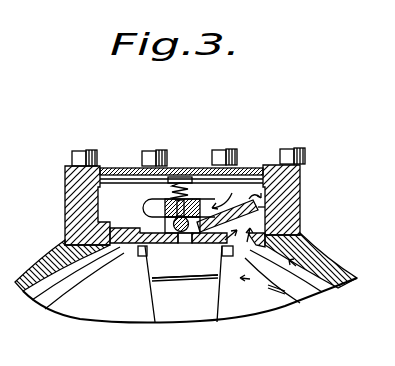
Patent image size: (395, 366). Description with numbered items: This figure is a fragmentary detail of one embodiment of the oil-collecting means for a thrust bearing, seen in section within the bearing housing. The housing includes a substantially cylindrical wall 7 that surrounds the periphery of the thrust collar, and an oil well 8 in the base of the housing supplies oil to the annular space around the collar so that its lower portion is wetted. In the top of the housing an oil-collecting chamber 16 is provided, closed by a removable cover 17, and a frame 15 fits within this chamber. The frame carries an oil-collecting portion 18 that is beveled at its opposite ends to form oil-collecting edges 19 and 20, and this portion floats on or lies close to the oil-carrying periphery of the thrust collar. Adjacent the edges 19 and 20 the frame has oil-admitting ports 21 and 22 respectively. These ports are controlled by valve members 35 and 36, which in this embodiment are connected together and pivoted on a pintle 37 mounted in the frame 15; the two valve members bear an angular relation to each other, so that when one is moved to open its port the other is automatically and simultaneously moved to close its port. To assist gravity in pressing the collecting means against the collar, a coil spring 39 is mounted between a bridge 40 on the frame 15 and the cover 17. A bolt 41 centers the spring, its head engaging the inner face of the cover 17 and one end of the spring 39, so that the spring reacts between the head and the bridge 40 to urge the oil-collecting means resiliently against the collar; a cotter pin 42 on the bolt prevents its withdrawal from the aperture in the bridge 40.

The cylindrical wall 7 is at (322, 264).
The oil well 8 is at (283, 263).
The frame 15 is at (97, 240).
The oil-collecting chamber 16 is at (258, 188).
The cover 17 is at (110, 168).
The oil-collecting portion 18 is at (176, 266).
The oil-collecting edge 19 is at (141, 250).
The oil-collecting edge 20 is at (238, 238).
The oil-admitting port 21 is at (121, 254).
The oil-admitting port 22 is at (246, 240).
The valve member 35 is at (97, 222).
The valve member 36 is at (260, 207).
The pintle 37 is at (168, 249).
The coil spring 39 is at (170, 195).
The bridge 40 is at (150, 210).
The bolt 41 is at (184, 178).
The cotter pin 42 is at (212, 192).